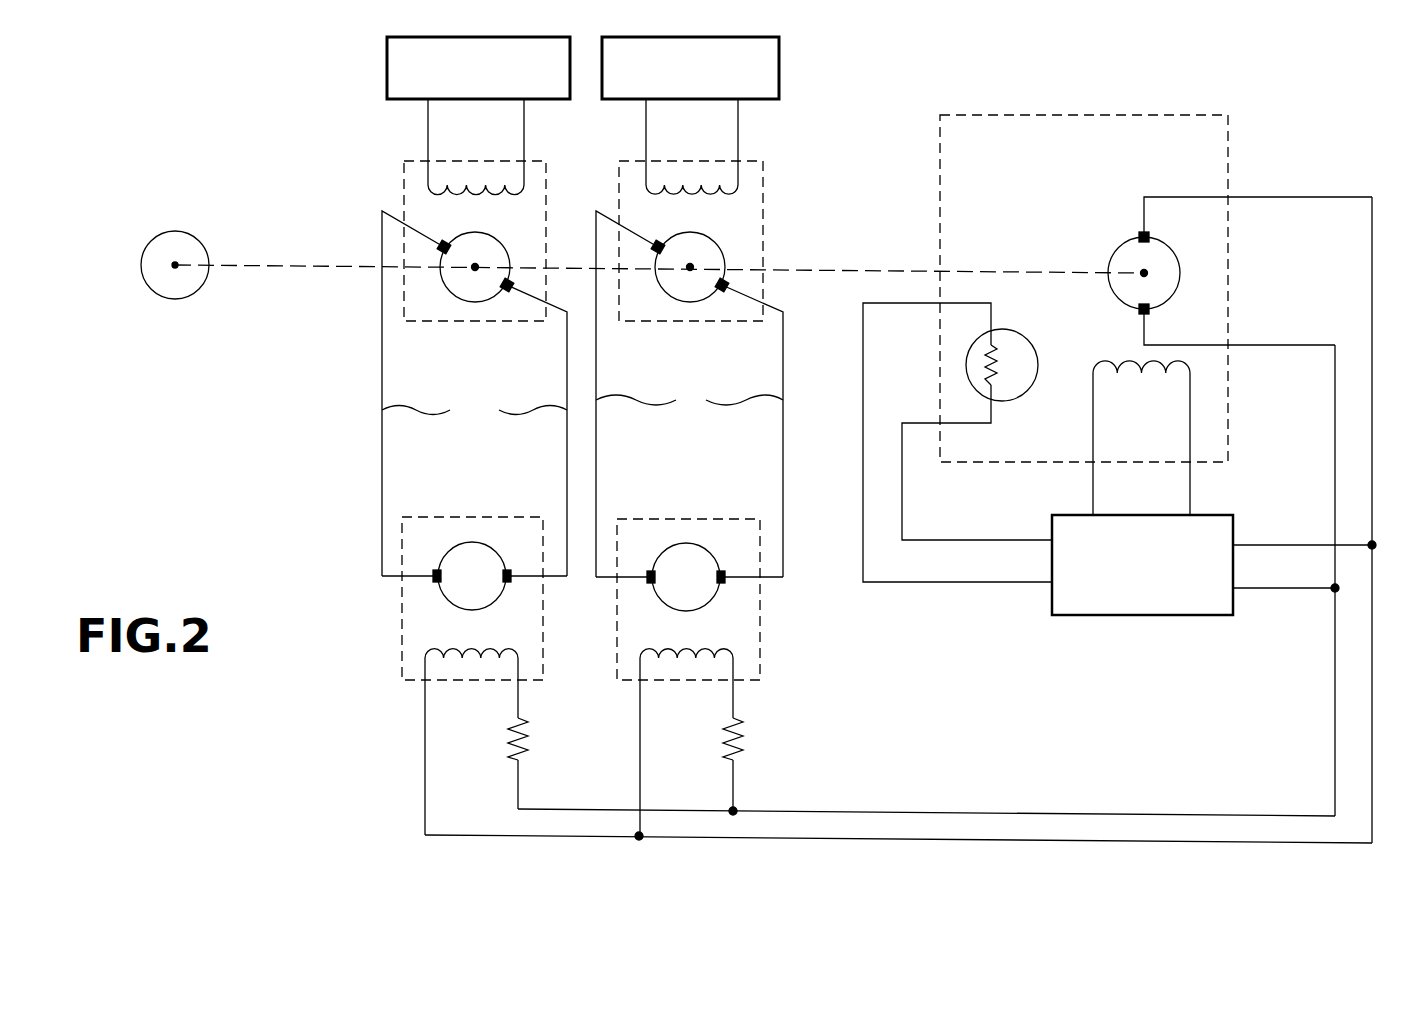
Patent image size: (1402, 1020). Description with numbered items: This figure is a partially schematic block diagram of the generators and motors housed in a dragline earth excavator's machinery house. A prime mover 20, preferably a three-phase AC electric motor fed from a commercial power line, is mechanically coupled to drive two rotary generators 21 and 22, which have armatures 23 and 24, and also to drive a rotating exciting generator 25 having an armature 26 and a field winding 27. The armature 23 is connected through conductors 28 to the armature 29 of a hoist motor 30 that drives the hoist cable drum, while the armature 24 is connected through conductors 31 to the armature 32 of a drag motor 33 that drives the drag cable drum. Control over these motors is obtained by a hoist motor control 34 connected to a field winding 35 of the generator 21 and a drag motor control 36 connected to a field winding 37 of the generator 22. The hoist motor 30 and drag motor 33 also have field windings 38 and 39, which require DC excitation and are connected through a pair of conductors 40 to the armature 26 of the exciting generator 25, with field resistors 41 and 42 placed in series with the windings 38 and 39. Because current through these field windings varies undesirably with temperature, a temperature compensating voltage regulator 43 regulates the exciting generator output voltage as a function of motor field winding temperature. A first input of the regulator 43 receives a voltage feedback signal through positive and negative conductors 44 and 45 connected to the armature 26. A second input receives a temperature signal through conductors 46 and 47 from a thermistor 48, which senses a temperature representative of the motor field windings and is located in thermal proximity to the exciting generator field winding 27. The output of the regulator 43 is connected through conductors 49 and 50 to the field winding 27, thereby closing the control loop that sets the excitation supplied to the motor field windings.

The prime mover 20 is at (182, 232).
The rotary generator 21 is at (404, 161).
The rotary generator 22 is at (623, 161).
The armature 23 is at (476, 302).
The armature 24 is at (693, 302).
The exciting generator 25 is at (1034, 115).
The armature 26 is at (1114, 257).
The field winding 27 is at (1156, 378).
The conductors 28 is at (474, 393).
The armature 29 is at (505, 556).
The hoist motor 30 is at (472, 517).
The conductors 31 is at (689, 394).
The armature 32 is at (720, 559).
The drag motor 33 is at (696, 519).
The hoist motor control 34 is at (428, 37).
The field winding 35 is at (488, 183).
The drag motor control 36 is at (731, 38).
The field winding 37 is at (706, 184).
The field winding 38 is at (477, 666).
The field winding 39 is at (693, 668).
The conductors 40 is at (1134, 843).
The field resistor 41 is at (508, 741).
The field resistor 42 is at (723, 741).
The temperature compensating voltage regulator 43 is at (1127, 616).
The positive conductor 44 is at (1297, 545).
The negative conductor 45 is at (1301, 589).
The conductor 46 is at (863, 502).
The conductor 47 is at (902, 501).
The thermistor 48 is at (1028, 341).
The conductor 49 is at (1093, 490).
The conductor 50 is at (1190, 490).